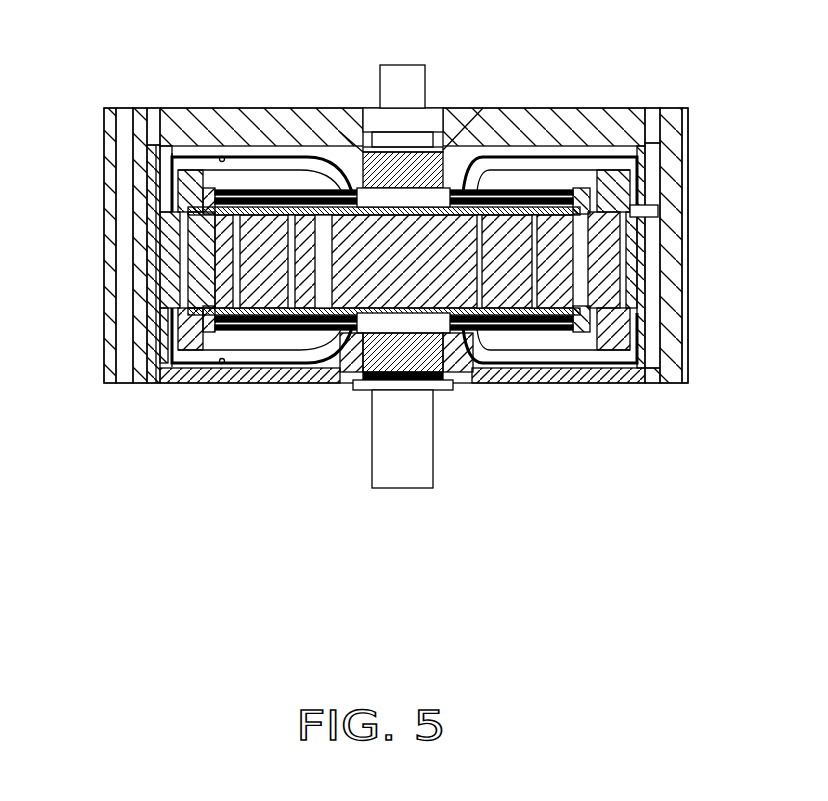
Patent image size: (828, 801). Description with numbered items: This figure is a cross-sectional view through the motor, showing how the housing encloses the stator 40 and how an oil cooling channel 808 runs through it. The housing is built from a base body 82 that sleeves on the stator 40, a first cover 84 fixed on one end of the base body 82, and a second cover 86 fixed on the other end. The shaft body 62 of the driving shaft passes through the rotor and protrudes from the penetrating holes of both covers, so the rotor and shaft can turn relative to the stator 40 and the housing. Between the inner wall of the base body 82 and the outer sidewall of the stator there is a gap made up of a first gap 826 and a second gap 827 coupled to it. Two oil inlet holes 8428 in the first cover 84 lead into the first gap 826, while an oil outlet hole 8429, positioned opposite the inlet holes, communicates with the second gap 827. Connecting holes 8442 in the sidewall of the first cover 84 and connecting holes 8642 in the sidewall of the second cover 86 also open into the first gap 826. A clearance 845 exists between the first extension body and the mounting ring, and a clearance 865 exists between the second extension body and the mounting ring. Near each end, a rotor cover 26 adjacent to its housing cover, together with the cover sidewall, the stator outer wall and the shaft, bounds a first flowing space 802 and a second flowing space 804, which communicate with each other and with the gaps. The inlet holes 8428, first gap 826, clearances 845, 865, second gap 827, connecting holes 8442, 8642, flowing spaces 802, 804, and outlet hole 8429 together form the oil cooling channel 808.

The shaft body 62 is at (406, 85).
The oil outlet hole 8429 is at (153, 125).
The connecting holes 8442 is at (218, 155).
The first flowing space 802 is at (287, 172).
The first cover 84 is at (520, 125).
The rotor cover 26 is at (577, 190).
The oil inlet holes 8428 is at (650, 127).
The second gap 827 is at (150, 182).
The first gap 826 is at (652, 173).
The clearance 845 is at (165, 210).
The oil cooling channel 808 is at (658, 203).
The stator 40 is at (167, 262).
The base body 82 is at (670, 293).
The clearance 865 is at (163, 310).
The connecting holes 8642 is at (213, 368).
The second flowing space 804 is at (272, 350).
The bottom cover 86 is at (503, 370).